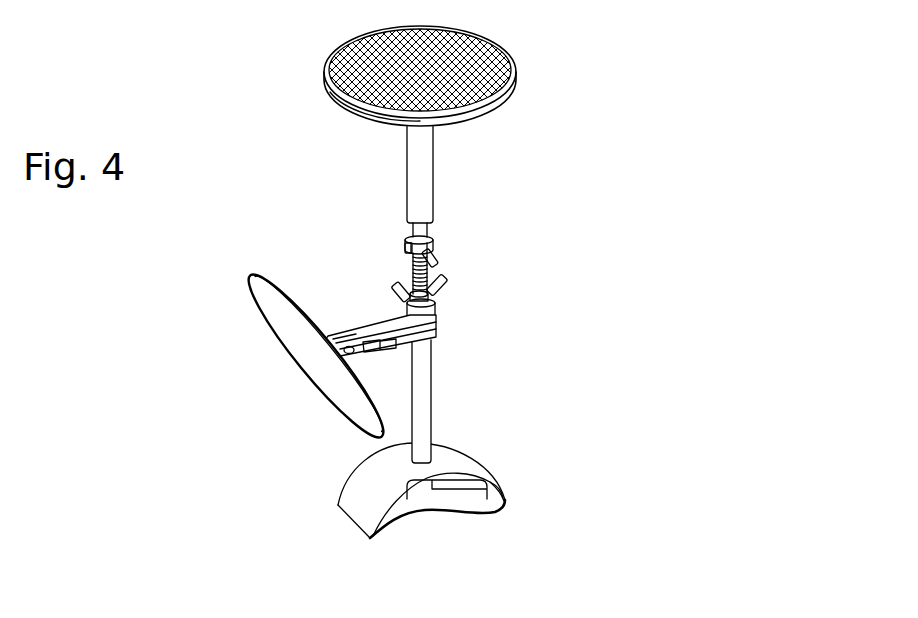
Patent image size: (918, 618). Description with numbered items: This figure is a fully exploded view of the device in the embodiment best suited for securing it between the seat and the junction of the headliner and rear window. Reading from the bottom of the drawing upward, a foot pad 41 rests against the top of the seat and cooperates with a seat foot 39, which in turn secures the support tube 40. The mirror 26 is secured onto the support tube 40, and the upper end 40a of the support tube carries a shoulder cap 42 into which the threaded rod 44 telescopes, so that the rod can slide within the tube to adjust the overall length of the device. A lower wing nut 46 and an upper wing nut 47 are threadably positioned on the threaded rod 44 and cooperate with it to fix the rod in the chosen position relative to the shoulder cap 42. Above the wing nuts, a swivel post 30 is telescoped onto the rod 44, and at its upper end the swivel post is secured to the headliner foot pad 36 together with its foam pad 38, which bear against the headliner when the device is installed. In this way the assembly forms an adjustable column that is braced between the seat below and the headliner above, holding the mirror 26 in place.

The mirror 26 is at (347, 400).
The swivel post 30 is at (420, 185).
The headliner foot pad 36 is at (362, 106).
The foam pad 38 is at (457, 63).
The seat foot 39 is at (483, 512).
The support tube 40 is at (432, 387).
The upper end 40a is at (432, 330).
The foot pad 41 is at (450, 515).
The shoulder cap 42 is at (436, 312).
The threaded rod 44 is at (412, 265).
The lower wing nut 46 is at (395, 289).
The upper wing nut 47 is at (437, 259).